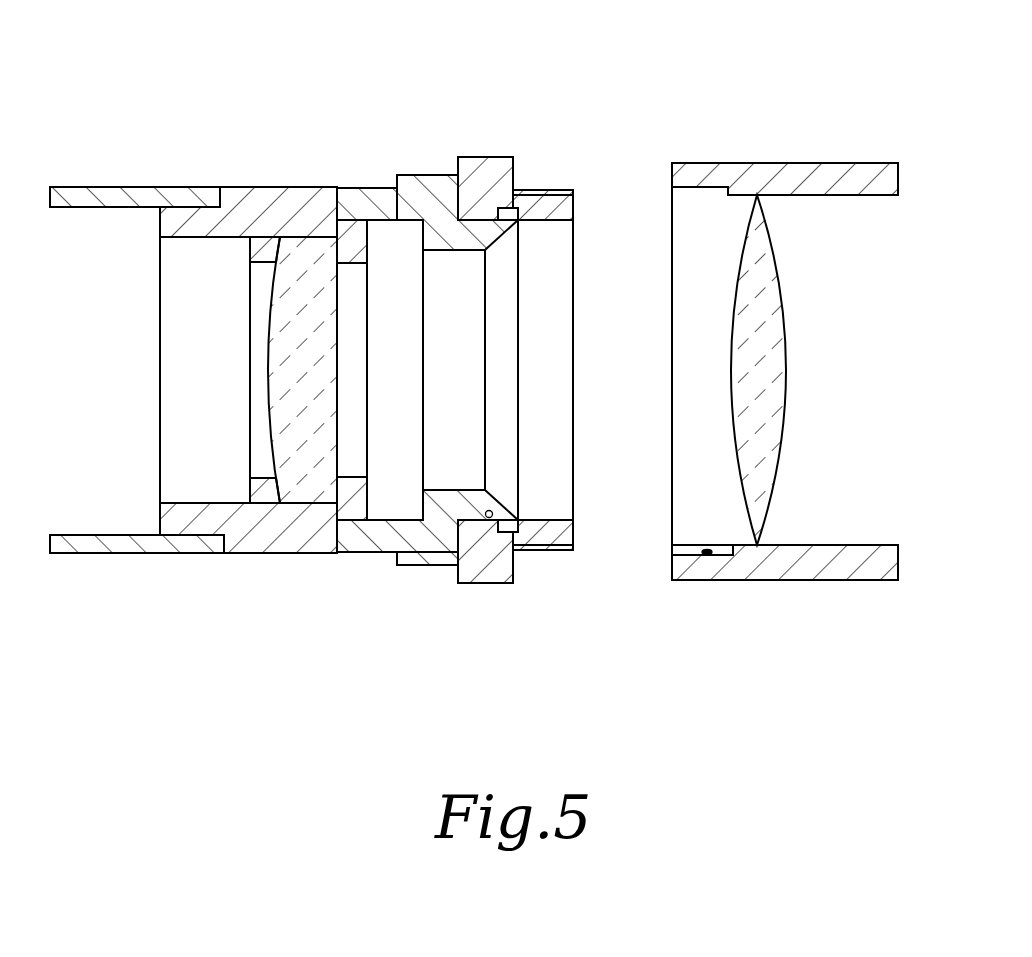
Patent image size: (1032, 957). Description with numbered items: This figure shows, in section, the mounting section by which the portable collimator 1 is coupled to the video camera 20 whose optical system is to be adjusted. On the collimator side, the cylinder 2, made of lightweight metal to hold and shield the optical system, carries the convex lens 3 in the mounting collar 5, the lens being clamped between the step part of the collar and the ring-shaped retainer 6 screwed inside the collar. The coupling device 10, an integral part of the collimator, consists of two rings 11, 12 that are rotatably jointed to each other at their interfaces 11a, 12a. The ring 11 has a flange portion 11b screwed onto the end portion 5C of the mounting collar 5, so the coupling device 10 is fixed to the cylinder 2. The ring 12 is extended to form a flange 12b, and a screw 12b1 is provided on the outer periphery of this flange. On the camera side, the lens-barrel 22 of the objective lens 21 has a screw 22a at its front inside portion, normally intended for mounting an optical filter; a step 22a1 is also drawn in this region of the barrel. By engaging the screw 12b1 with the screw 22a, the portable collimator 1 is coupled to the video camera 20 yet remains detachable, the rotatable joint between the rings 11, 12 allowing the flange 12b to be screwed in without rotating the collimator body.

The portable collimator 1 is at (80, 102).
The cylinder 2 is at (120, 187).
The convex lens 3 is at (313, 503).
The mounting collar 5 is at (246, 187).
The end portion of the mounting collar 5C is at (350, 240).
The retainer 6 is at (266, 503).
The coupling device 10 is at (490, 87).
The ring 11 is at (428, 175).
The interface of ring 11 11a is at (476, 522).
The flange portion of ring 11 11b is at (375, 187).
The ring 12 is at (486, 157).
The interface of ring 12 12a is at (490, 518).
The flange of ring 12 12b is at (588, 206).
The screw of flange 12b 12b1 is at (548, 189).
The video camera 20 is at (828, 138).
The objective lens 21 is at (782, 375).
The lens-barrel 22 is at (727, 163).
The screw of lens-barrel 22a is at (688, 543).
The step of recess 22a1 is at (715, 553).